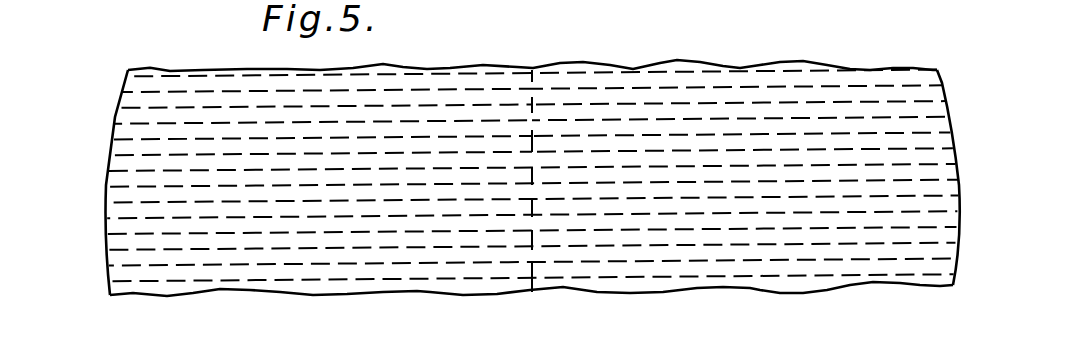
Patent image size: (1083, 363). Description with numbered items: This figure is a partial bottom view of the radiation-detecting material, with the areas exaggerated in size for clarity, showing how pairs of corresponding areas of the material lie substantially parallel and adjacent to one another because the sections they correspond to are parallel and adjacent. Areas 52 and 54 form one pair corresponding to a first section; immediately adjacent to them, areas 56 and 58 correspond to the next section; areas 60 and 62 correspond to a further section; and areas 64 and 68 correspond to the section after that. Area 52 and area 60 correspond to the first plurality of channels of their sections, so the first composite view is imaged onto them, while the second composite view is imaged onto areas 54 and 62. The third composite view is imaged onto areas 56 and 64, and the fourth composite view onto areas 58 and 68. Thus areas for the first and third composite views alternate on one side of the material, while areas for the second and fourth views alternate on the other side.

The area 52 is at (131, 102).
The area 54 is at (940, 86).
The area 56 is at (125, 118).
The area 58 is at (937, 108).
The area 60 is at (120, 131).
The area 62 is at (938, 122).
The area 64 is at (115, 145).
The area 68 is at (942, 138).